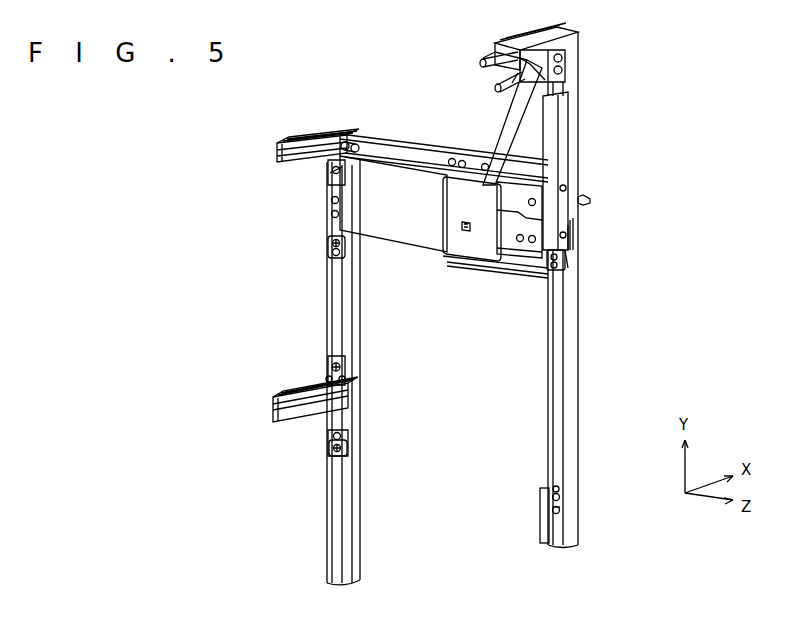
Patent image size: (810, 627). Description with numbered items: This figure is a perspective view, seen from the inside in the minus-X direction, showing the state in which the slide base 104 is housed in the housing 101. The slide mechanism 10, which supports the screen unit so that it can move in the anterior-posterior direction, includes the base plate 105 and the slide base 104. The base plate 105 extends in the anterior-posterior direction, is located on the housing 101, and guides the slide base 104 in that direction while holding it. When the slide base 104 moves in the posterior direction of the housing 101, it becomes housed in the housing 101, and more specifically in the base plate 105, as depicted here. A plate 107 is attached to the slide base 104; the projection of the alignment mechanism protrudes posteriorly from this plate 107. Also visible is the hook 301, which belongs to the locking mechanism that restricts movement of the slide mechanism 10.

The slide mechanism 10 is at (433, 262).
The housing 101 is at (330, 314).
The slide base 104 is at (513, 225).
The base plate 105 is at (407, 173).
The plate 107 is at (552, 183).
The hook 301 is at (587, 200).